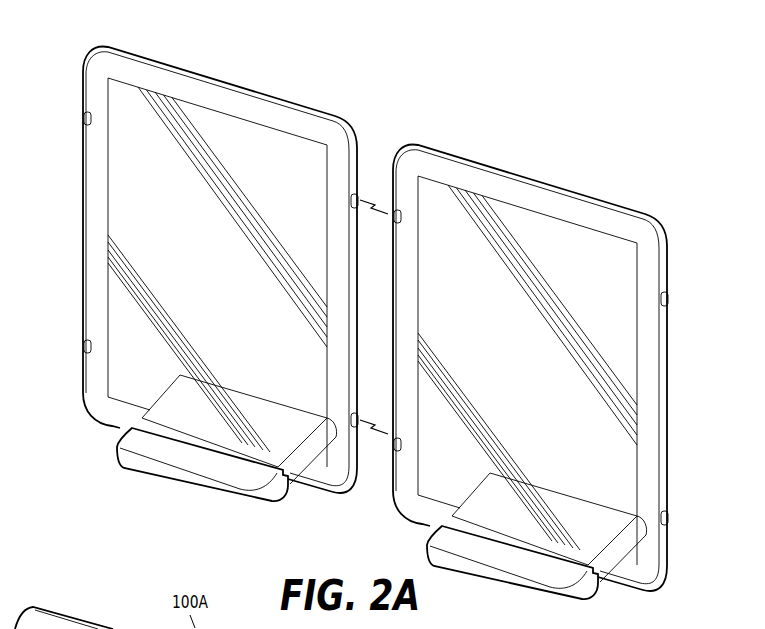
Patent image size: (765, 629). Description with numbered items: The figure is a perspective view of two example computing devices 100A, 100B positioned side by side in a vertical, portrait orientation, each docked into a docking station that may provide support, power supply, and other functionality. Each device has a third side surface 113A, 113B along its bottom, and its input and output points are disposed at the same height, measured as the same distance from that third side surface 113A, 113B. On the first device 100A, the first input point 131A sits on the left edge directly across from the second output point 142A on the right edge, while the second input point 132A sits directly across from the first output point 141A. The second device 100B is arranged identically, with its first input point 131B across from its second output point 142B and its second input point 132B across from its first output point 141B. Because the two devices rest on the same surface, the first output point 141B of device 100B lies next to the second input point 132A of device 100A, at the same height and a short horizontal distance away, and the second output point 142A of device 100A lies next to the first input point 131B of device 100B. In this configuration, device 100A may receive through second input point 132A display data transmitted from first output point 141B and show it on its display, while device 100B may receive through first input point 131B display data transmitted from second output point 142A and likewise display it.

The computing device 100A is at (254, 76).
The computing device 100B is at (530, 346).
The third side surface 113A is at (307, 486).
The third side surface 113B is at (537, 551).
The first input point 131A is at (84, 345).
The first input point 131B is at (426, 444).
The second input point 132A is at (351, 200).
The second input point 132B is at (691, 310).
The first output point 141A is at (84, 116).
The first output point 141B is at (426, 223).
The second output point 142A is at (351, 418).
The second output point 142B is at (691, 524).